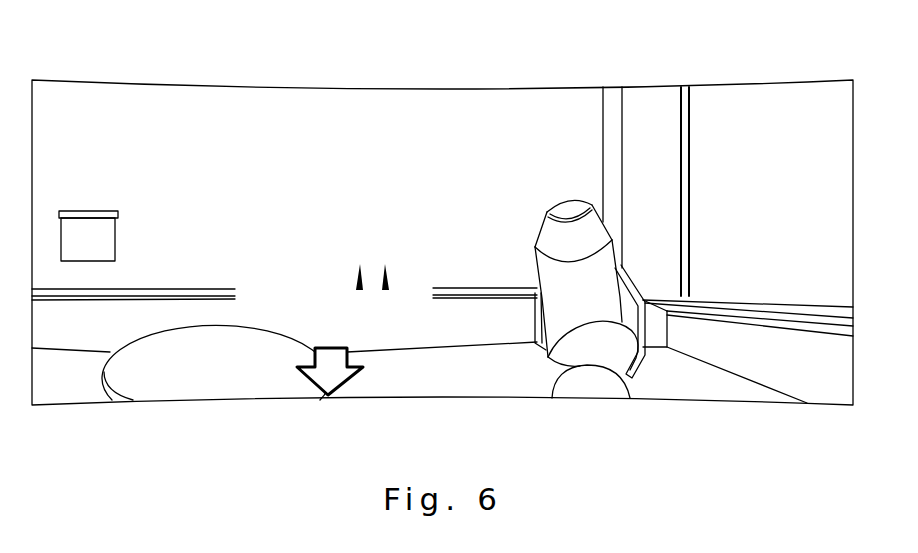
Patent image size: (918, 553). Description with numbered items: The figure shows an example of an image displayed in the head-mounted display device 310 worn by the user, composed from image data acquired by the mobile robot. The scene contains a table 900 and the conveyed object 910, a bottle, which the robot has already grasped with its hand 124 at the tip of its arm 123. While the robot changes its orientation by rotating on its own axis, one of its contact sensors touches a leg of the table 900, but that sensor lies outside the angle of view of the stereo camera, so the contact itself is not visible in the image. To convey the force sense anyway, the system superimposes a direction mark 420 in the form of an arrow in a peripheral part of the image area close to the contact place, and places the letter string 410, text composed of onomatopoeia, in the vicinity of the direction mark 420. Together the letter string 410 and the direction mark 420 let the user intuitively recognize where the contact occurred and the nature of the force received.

The head-mounted display device 310 is at (114, 23).
The table 900 is at (118, 372).
The letter string 410 is at (302, 292).
The direction mark 420 is at (357, 378).
The object to be conveyed 910 is at (557, 323).
The hand 124 is at (543, 352).
The arm 123 is at (603, 390).